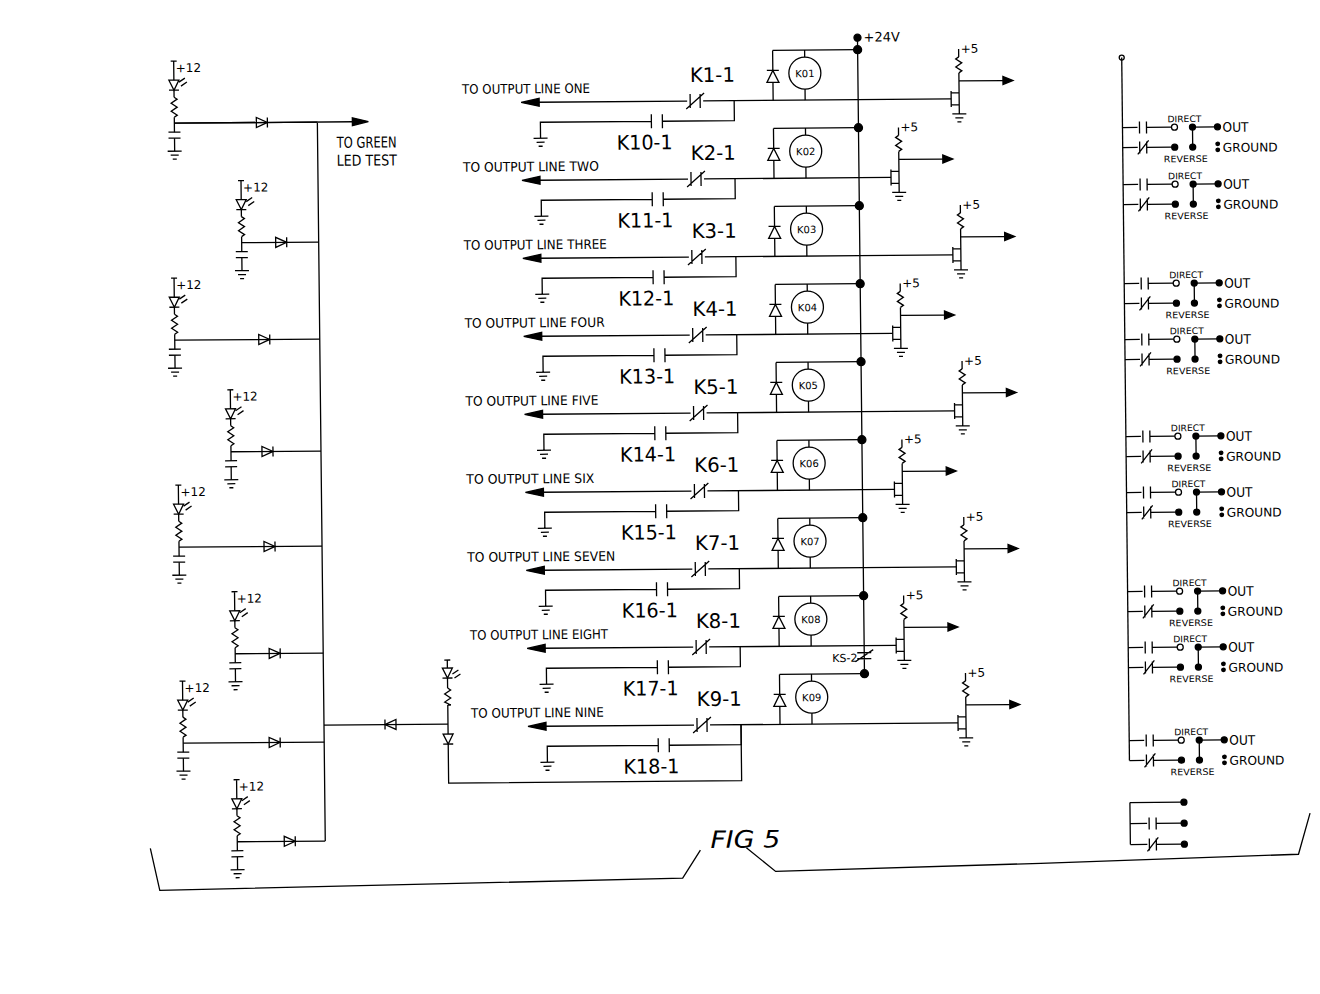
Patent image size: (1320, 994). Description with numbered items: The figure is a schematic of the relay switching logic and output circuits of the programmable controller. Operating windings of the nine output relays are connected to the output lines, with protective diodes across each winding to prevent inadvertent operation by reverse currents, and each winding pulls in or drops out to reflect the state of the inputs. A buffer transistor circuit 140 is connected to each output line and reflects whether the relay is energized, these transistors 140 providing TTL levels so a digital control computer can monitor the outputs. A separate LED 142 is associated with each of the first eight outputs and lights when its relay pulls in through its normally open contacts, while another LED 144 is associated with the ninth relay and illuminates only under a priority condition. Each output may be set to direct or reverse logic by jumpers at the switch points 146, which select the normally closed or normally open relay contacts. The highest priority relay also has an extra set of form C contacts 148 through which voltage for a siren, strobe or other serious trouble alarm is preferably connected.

The buffer transistor circuit 140 is at (976, 114).
The LED 142 is at (188, 77).
The LED 144 is at (436, 675).
The switch points 146 is at (1208, 102).
The form C contacts 148 is at (1125, 801).